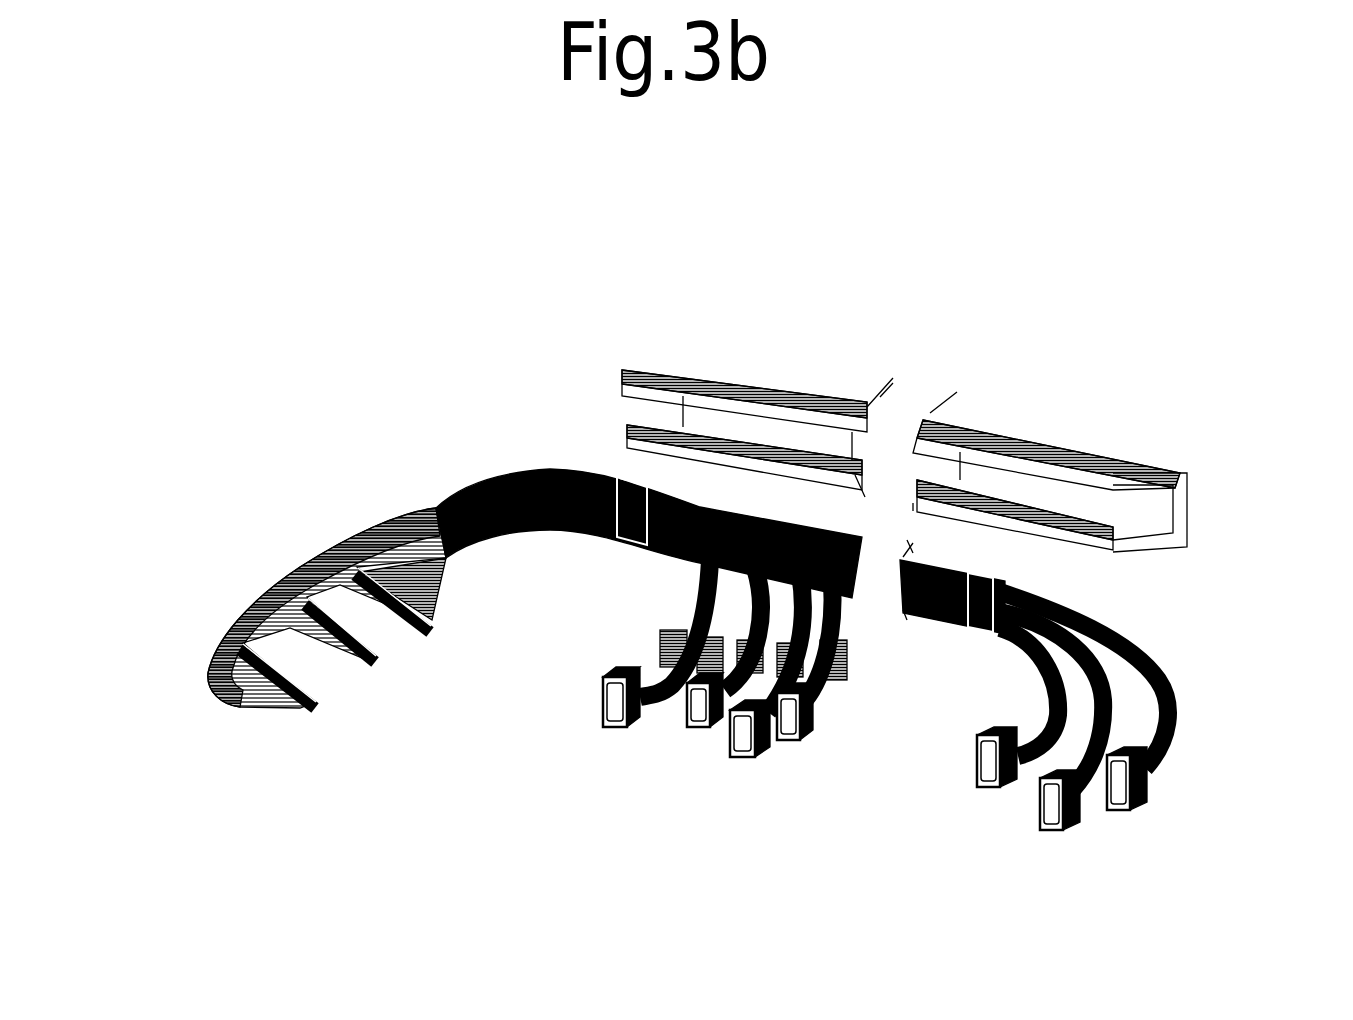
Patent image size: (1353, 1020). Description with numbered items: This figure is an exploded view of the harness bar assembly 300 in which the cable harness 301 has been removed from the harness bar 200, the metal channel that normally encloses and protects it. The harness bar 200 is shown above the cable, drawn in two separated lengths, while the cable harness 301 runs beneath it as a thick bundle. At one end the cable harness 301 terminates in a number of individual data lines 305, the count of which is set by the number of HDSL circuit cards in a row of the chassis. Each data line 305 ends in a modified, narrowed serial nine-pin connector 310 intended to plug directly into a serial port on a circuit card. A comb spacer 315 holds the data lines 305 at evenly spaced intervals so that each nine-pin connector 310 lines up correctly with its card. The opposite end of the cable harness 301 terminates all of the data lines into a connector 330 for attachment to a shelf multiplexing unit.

The harness bar assembly 300 is at (242, 229).
The harness bar 200 is at (802, 384).
The cable harness 301 is at (515, 537).
The connector 330 is at (324, 697).
The 9-pin connector 310 is at (615, 733).
The comb spacer 315 is at (840, 684).
The data line 305 is at (1178, 663).